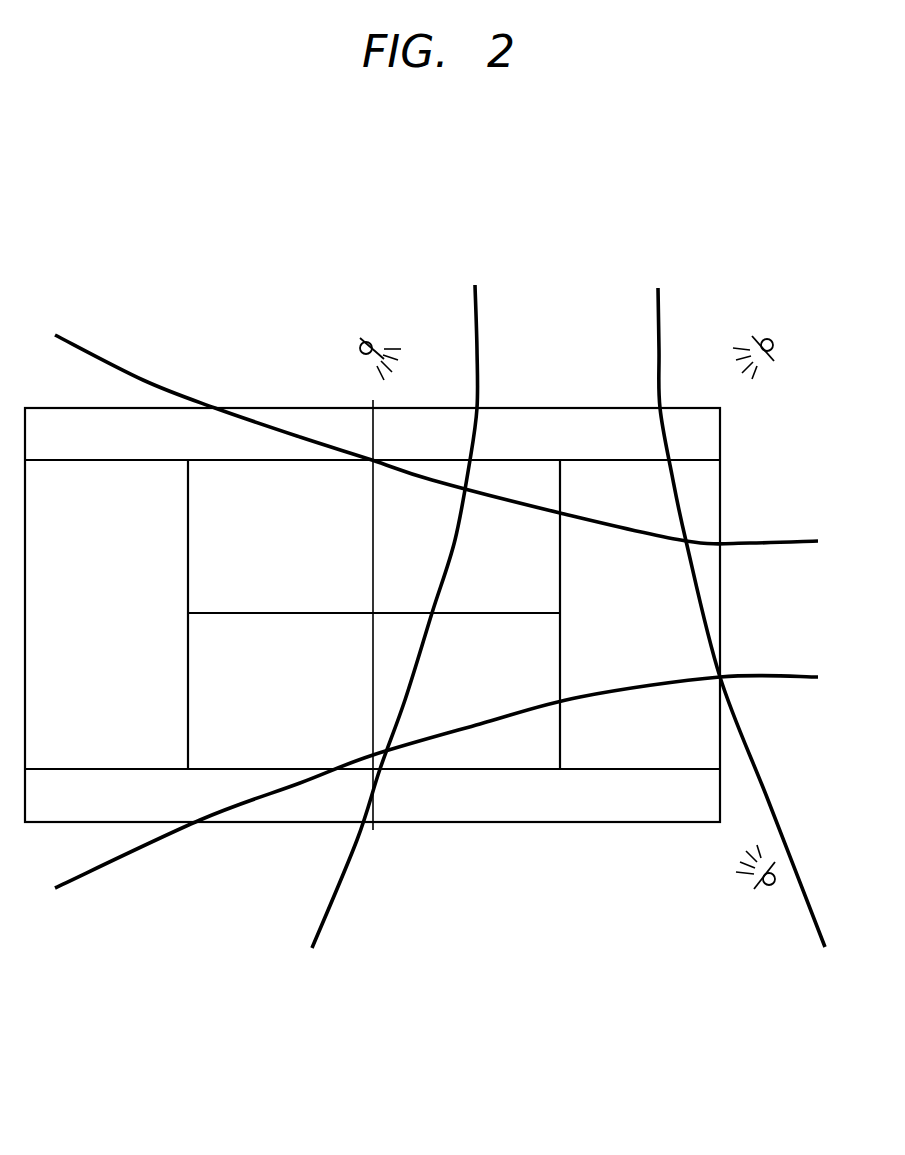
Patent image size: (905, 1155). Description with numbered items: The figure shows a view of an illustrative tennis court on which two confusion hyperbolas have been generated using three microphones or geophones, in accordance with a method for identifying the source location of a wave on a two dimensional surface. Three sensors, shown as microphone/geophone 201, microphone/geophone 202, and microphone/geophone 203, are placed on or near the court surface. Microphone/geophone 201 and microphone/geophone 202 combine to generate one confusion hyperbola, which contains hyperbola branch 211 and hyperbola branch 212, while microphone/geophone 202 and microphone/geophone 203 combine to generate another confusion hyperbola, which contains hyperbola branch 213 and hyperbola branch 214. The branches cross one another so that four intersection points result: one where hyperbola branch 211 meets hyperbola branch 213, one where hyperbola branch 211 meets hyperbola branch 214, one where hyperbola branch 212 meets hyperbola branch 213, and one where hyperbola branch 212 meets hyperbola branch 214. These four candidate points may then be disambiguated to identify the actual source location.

The microphone/geophone 201 is at (371, 341).
The microphone/geophone 202 is at (769, 338).
The microphone/geophone 203 is at (765, 886).
The hyperbola branch 211 is at (477, 286).
The hyperbola branch 212 is at (659, 288).
The hyperbola branch 213 is at (796, 537).
The hyperbola branch 214 is at (796, 675).